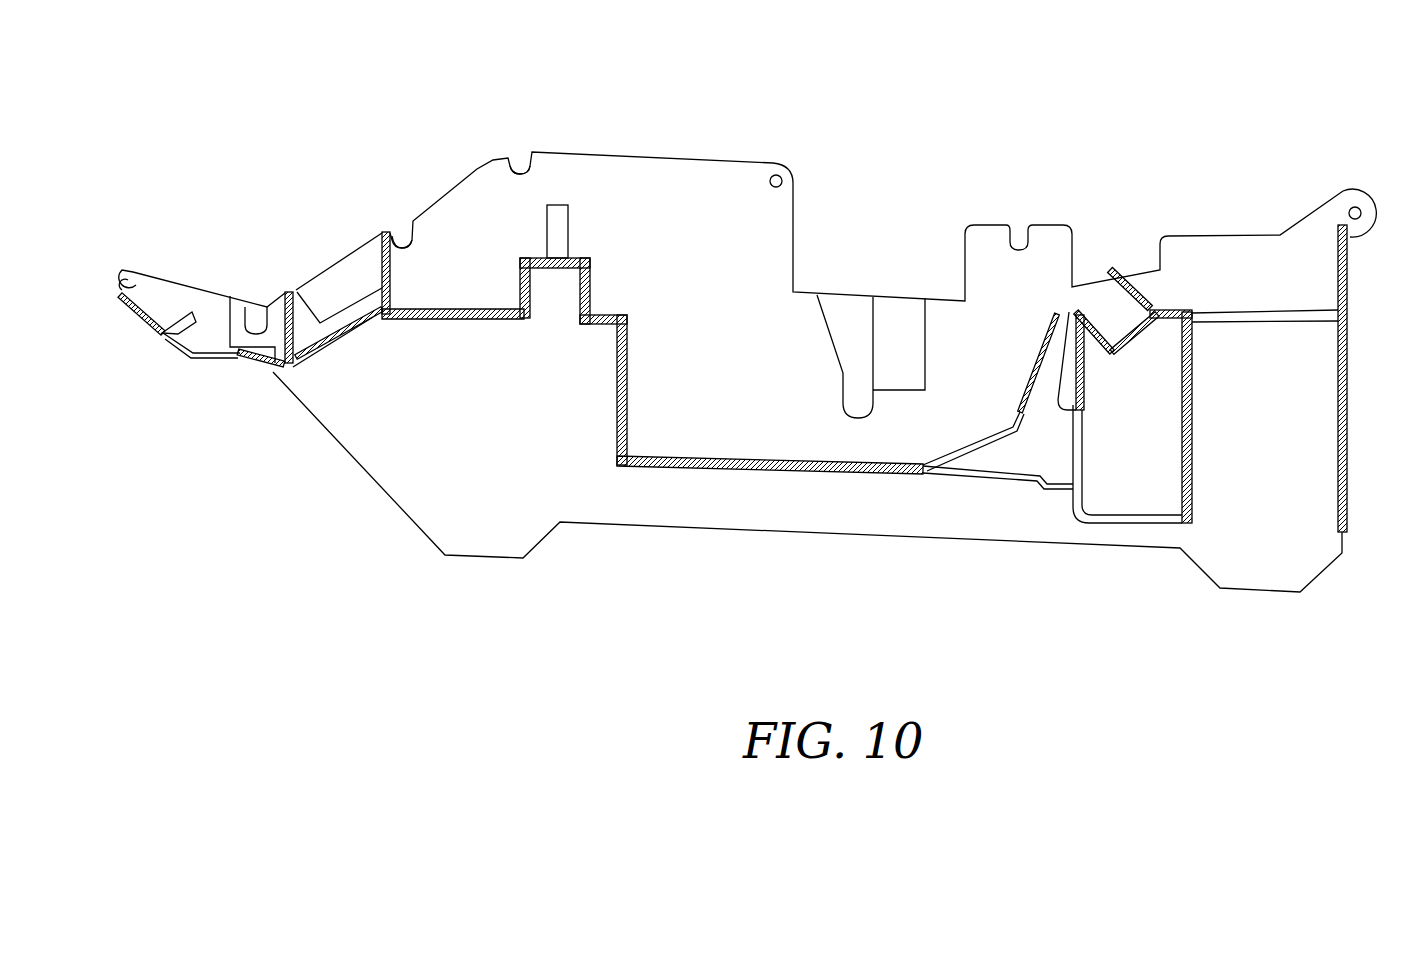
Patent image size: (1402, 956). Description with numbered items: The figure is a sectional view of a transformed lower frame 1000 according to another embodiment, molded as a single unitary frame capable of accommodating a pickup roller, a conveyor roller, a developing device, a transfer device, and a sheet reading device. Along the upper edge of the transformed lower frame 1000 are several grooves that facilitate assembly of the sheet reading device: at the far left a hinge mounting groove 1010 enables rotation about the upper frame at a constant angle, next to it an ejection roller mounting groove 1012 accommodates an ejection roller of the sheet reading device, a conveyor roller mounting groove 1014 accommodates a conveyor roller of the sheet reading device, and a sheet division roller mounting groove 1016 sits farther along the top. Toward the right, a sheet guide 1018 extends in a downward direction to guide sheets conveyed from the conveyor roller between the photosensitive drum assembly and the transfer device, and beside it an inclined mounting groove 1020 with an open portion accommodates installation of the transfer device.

The transformed lower frame 1000 is at (1222, 55).
The hinge mounting groove 1010 is at (130, 292).
The ejection roller mounting groove 1012 is at (255, 312).
The conveyor roller mounting groove 1014 is at (402, 237).
The sheet division roller mounting groove 1016 is at (520, 160).
The sheet guide 1018 is at (1040, 353).
The mounting groove 1020 is at (1097, 300).